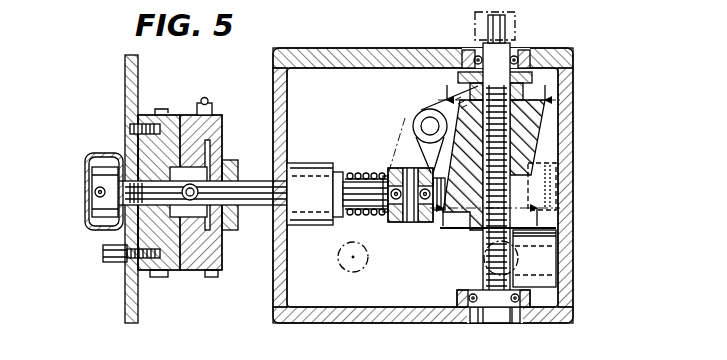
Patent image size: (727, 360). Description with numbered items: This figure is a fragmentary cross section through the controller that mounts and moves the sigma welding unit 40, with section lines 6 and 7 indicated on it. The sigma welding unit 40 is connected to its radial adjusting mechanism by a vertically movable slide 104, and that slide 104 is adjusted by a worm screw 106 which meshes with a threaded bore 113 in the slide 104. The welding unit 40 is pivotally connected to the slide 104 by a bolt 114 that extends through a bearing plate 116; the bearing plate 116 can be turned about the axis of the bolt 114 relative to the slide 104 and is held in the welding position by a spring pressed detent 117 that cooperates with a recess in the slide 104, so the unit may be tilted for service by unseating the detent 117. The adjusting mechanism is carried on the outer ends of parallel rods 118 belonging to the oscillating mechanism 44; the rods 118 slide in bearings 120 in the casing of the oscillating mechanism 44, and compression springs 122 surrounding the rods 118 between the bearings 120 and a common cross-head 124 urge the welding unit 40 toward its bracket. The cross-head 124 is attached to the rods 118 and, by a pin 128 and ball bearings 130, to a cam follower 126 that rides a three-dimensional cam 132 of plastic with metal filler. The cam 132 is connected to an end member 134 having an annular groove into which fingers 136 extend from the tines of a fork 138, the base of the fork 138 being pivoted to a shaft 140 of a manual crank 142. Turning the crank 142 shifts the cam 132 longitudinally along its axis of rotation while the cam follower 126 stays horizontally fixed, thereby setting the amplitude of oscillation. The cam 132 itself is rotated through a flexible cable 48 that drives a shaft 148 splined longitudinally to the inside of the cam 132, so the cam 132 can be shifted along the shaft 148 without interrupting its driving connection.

The sigma welding unit 40 is at (125, 92).
The oscillating mechanism 44 is at (573, 103).
The flexible cable 48 is at (475, 16).
The slide 104 is at (187, 262).
The worm screw 106 is at (212, 163).
The threaded bore 113 is at (196, 206).
The bolt 114 is at (100, 210).
The bearing plate 116 is at (143, 148).
The spring pressed detent 117 is at (156, 262).
The parallel rods 118 is at (362, 177).
The bearings 120 is at (333, 166).
The compression springs 122 is at (362, 212).
The cross-head 124 is at (413, 223).
The cam follower 126 is at (378, 178).
The pin 128 is at (390, 223).
The ball bearings 130 is at (391, 177).
The three-dimensional cam 132 is at (531, 138).
The end member 134 is at (527, 71).
The fingers 136 is at (520, 43).
The fork 138 is at (462, 76).
The shaft 140 is at (424, 122).
The manual crank 142 is at (485, 212).
The shaft 148 is at (518, 256).
The section line 6- 6 is at (499, 85).
The section line 7- 7 is at (495, 233).